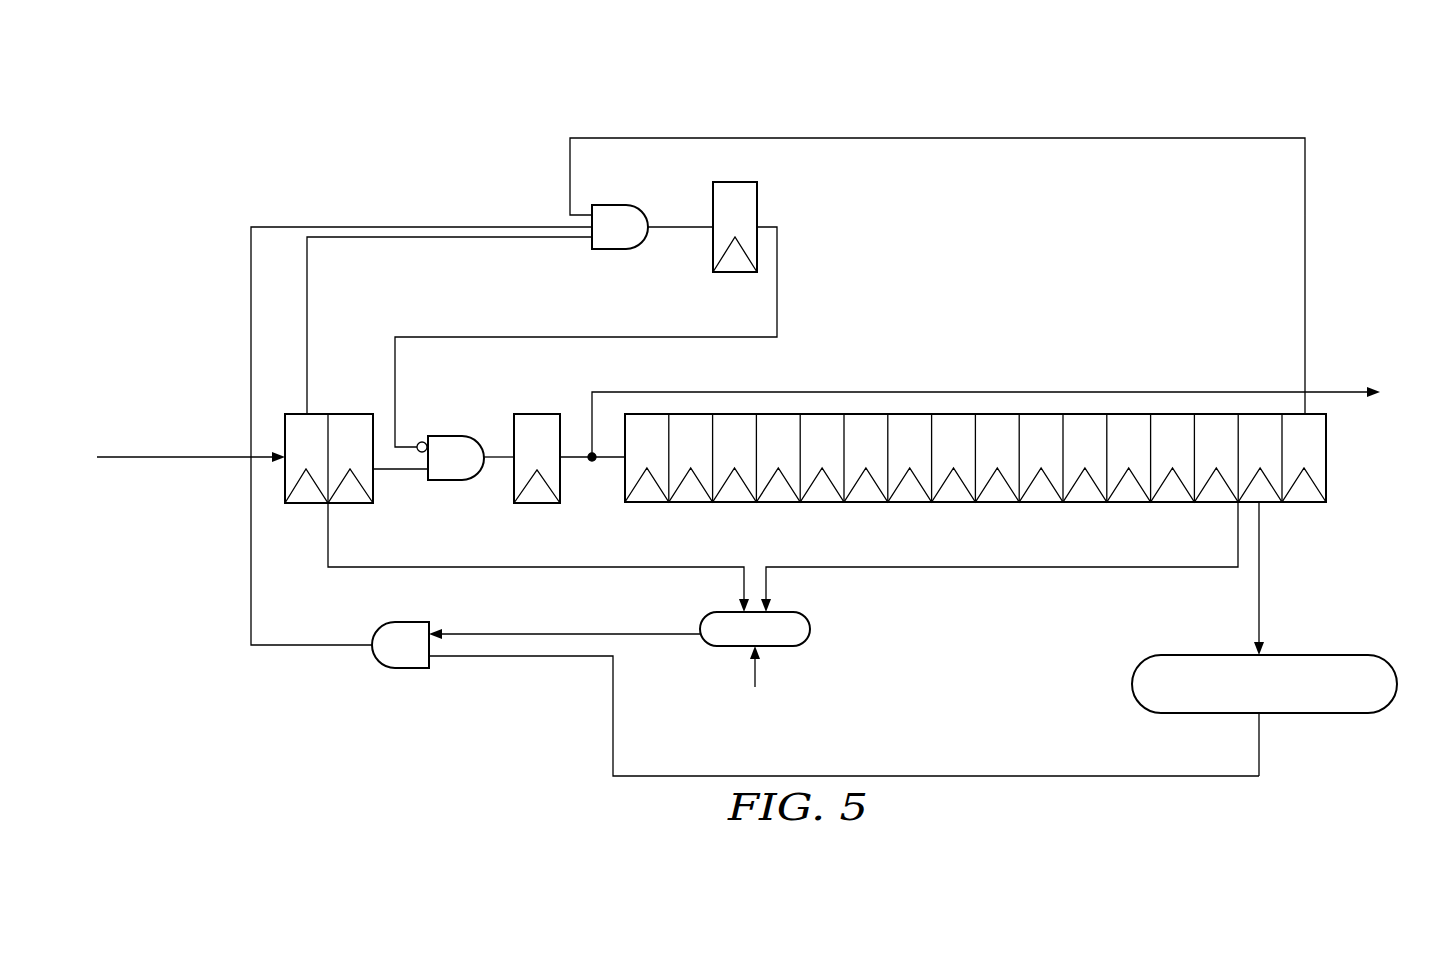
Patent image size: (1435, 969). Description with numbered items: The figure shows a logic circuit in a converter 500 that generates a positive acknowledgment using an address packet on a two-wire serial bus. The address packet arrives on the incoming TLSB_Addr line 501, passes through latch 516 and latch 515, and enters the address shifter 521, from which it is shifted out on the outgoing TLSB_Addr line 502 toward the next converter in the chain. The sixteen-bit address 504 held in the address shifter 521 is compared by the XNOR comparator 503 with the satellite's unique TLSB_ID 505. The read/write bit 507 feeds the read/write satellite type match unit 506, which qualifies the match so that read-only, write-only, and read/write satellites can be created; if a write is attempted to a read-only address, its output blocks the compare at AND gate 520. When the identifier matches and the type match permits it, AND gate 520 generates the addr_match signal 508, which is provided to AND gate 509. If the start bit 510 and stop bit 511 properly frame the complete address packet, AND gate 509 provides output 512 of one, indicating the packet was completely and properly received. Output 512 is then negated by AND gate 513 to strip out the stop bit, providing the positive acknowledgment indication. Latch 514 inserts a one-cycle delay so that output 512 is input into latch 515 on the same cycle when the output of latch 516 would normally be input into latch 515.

The converter 500 is at (423, 90).
The TLSB_Addr line 501 is at (172, 450).
The TLSB_Addr line 502 is at (1203, 390).
The XNOR comparator 503 is at (811, 630).
The 16-bit address 504 is at (1062, 529).
The TLSB_ID 505 is at (757, 670).
The read/write satellite type match unit 506 is at (1325, 714).
The read/write bit 507 is at (1261, 590).
The addr_match signal 508 is at (450, 226).
The AND gate 509 is at (622, 250).
The start bit 510 is at (570, 183).
The stop bit 511 is at (430, 239).
The output 512 is at (668, 225).
The AND gate 513 is at (452, 435).
The latch 514 is at (758, 188).
The latch 515 is at (535, 412).
The latch 516 is at (353, 412).
The AND gate 520 is at (402, 669).
The address shifter 521 is at (1378, 490).